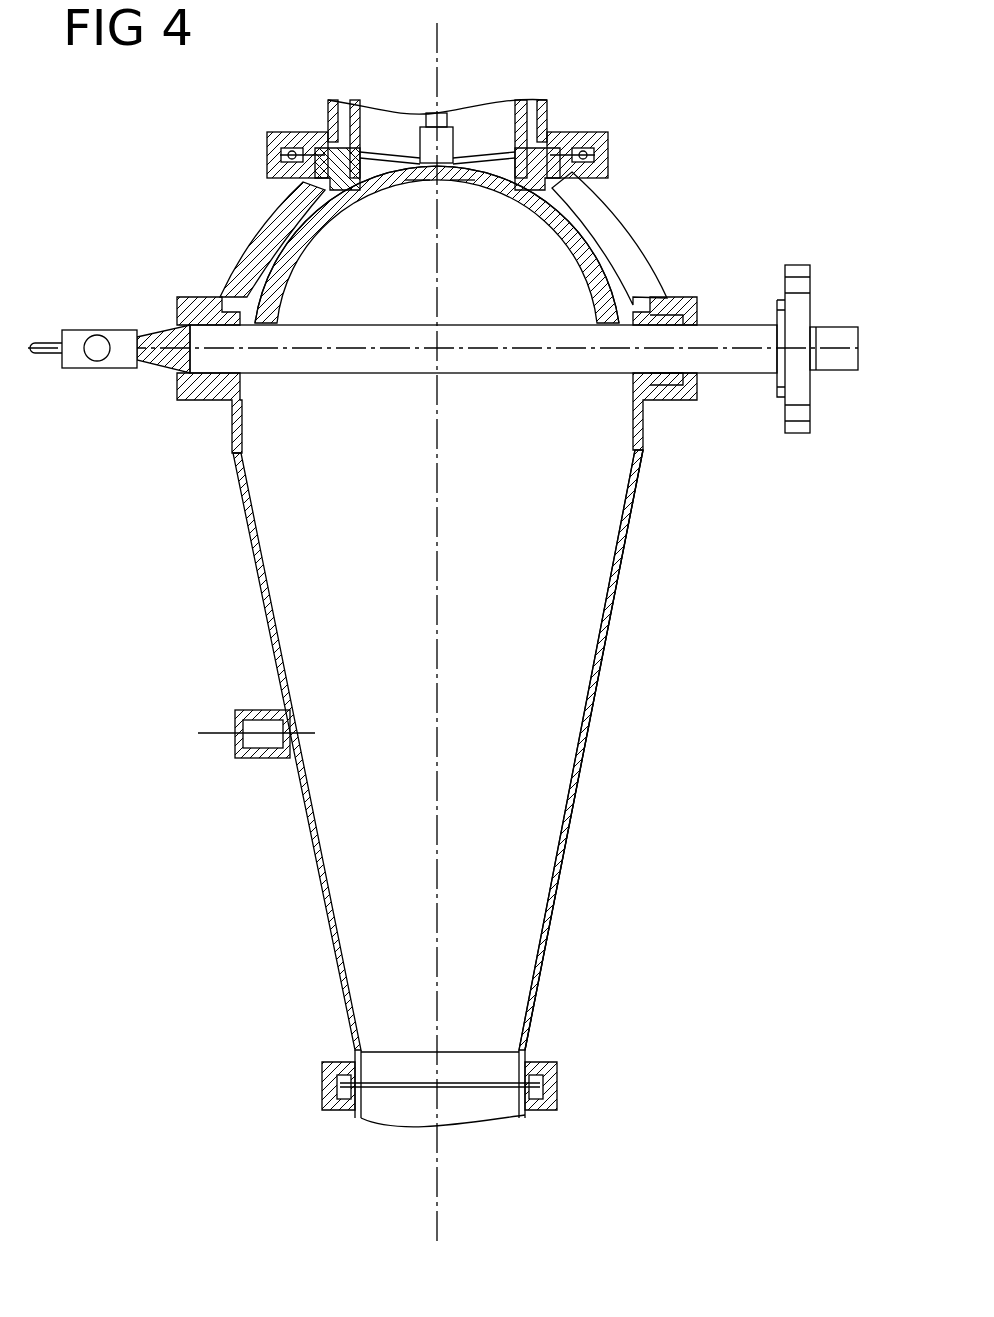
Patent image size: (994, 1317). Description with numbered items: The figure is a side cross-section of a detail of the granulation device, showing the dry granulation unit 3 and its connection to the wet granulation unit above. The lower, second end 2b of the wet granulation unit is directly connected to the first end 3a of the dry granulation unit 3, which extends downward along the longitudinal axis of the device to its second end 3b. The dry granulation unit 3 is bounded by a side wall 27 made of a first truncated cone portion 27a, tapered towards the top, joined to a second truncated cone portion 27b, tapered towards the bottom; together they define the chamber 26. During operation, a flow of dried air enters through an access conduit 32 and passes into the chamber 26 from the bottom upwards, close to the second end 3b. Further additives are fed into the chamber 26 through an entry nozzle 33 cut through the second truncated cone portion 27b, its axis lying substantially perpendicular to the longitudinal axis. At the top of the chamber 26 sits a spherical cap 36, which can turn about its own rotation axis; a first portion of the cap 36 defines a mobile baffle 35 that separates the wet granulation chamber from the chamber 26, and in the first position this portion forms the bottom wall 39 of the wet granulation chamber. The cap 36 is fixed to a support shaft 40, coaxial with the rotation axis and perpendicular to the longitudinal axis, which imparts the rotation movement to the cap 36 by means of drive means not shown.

The second end 2b is at (495, 155).
The dry granulation unit 3 is at (225, 537).
The first end 3a is at (383, 223).
The second end 3b is at (495, 1063).
The chamber 26 is at (555, 628).
The side wall 27 is at (620, 565).
The first truncated cone portion 27a is at (607, 248).
The second truncated cone portion 27b is at (585, 760).
The access conduit 32 is at (332, 293).
The entry nozzle 33 is at (250, 760).
The mobile baffle 35 is at (415, 185).
The spherical cap 36 is at (560, 238).
The bottom wall 39 is at (463, 180).
The support shaft 40 is at (220, 353).